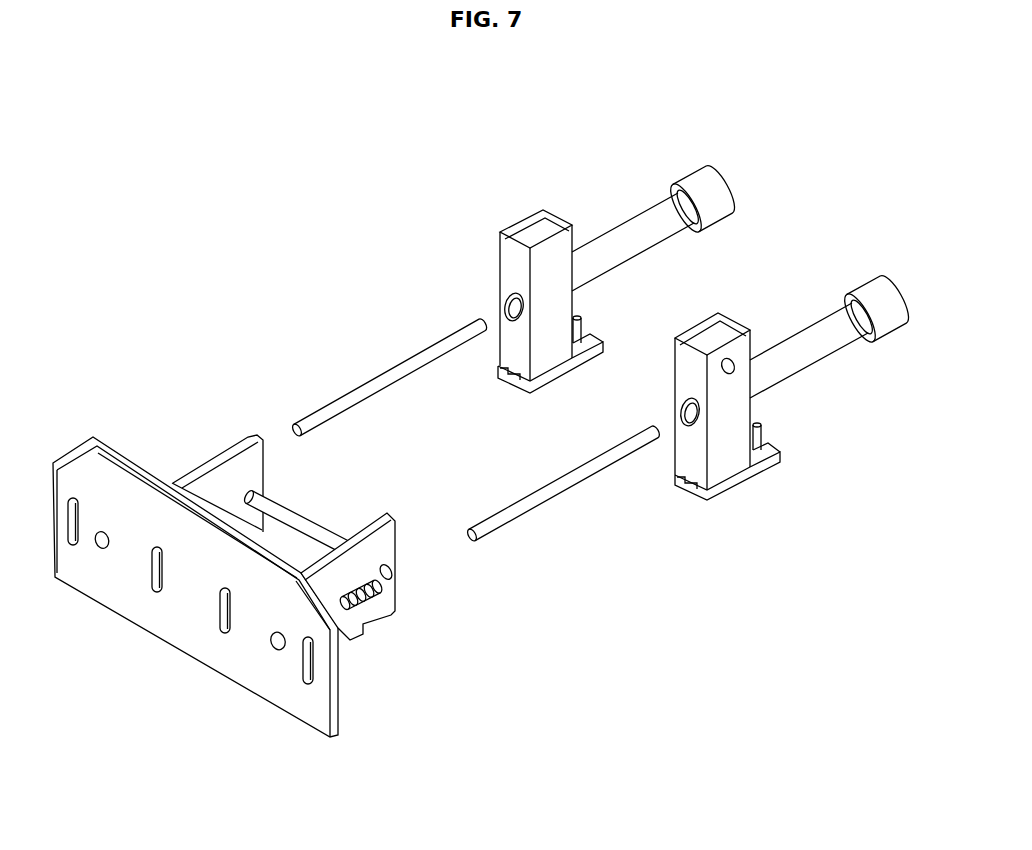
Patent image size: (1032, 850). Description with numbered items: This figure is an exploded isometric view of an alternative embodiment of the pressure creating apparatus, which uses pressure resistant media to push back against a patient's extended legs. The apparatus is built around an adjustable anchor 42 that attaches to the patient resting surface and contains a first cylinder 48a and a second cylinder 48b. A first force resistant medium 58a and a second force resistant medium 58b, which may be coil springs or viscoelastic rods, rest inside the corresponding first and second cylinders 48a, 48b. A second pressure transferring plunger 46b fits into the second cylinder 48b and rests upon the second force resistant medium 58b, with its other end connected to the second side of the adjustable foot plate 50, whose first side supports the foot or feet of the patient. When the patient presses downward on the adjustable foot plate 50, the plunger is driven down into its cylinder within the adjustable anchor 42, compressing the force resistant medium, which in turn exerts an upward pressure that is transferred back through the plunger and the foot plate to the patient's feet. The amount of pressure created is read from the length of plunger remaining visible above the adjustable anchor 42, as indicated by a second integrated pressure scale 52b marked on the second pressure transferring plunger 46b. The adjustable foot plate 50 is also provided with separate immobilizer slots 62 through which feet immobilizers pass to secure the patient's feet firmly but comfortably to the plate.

The adjustable anchor 42 is at (560, 330).
The second pressure transferring plunger 46b is at (378, 596).
The first cylinder 48a is at (648, 236).
The second cylinder 48b is at (822, 337).
The adjustable foot plate 50 is at (139, 512).
The second integrated pressure scale 52b is at (344, 617).
The first force resistant medium 58a is at (386, 386).
The second force resistant medium 58b is at (559, 504).
The immobilizer slots 62 is at (302, 668).